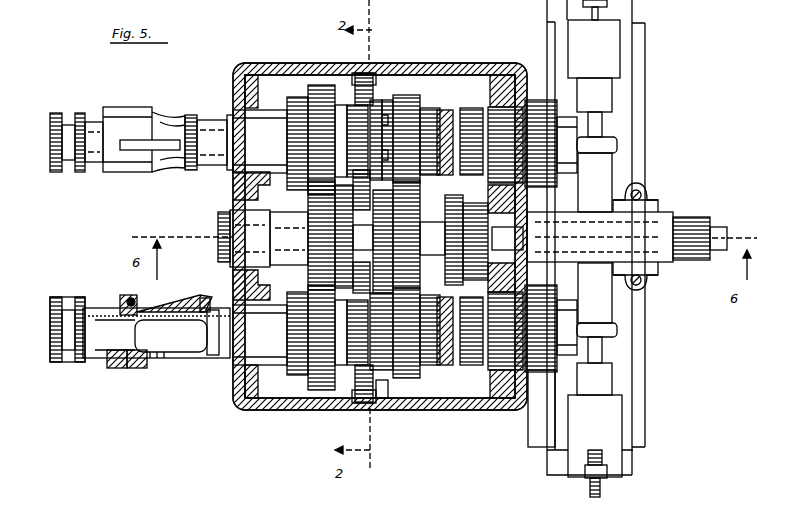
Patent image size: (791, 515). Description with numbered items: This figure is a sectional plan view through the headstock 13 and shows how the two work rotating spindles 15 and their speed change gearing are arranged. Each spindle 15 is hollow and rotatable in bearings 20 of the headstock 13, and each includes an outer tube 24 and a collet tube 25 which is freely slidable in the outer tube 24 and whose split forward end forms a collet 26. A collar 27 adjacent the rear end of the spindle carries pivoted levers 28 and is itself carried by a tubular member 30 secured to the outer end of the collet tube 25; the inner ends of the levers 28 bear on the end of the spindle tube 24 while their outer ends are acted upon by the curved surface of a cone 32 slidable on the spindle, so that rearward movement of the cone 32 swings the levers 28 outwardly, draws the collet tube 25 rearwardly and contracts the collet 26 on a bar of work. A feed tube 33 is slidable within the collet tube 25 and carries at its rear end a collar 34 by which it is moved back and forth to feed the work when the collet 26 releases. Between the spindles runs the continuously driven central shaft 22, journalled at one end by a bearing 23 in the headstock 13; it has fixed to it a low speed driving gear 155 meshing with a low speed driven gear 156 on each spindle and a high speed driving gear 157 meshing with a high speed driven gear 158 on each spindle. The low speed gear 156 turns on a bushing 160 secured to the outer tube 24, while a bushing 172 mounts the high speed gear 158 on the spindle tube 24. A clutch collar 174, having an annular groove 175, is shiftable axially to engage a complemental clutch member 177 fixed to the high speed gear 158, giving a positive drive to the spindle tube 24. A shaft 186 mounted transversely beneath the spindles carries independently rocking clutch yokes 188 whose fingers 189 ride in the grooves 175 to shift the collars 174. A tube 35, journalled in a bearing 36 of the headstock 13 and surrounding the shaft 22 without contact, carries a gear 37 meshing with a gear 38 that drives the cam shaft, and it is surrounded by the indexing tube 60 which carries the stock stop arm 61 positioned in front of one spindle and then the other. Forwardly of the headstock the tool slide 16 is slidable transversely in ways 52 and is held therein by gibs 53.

The headstock 13 is at (484, 64).
The spindle 15 is at (428, 106).
The tool slide 16 is at (646, 103).
The bearings 20 is at (495, 108).
The central shaft 22 is at (733, 220).
The bearing 23 is at (222, 232).
The outer tube 24 is at (212, 352).
The collet tube 25 is at (125, 370).
The collet 26 is at (578, 168).
The collar 27 is at (117, 368).
The levers 28 is at (165, 300).
The tubular member 30 is at (98, 357).
The cone 32 is at (178, 357).
The feed tube 33 is at (157, 352).
The collar 34 is at (67, 305).
The tube 35 is at (705, 210).
The bearing 36 is at (565, 245).
The gear 37 is at (447, 207).
The gear 38 is at (447, 190).
The ways 52 is at (645, 403).
The gibs 53 is at (530, 430).
The indexing tube 60 is at (660, 212).
The stock stop arm 61 is at (640, 202).
The low speed driving gear 155 is at (310, 209).
The low speed driven gear 156 is at (307, 90).
The high speed driving gear 157 is at (455, 265).
The high speed driven gear 158 is at (428, 388).
The bushing 160 is at (278, 136).
The bushing 172 is at (448, 108).
The clutch collar 174 is at (377, 107).
The annular groove 175 is at (363, 140).
The clutch member 177 is at (390, 107).
The shaft 186 is at (357, 375).
The clutch yokes 188 is at (378, 380).
The fingers 189 is at (385, 398).